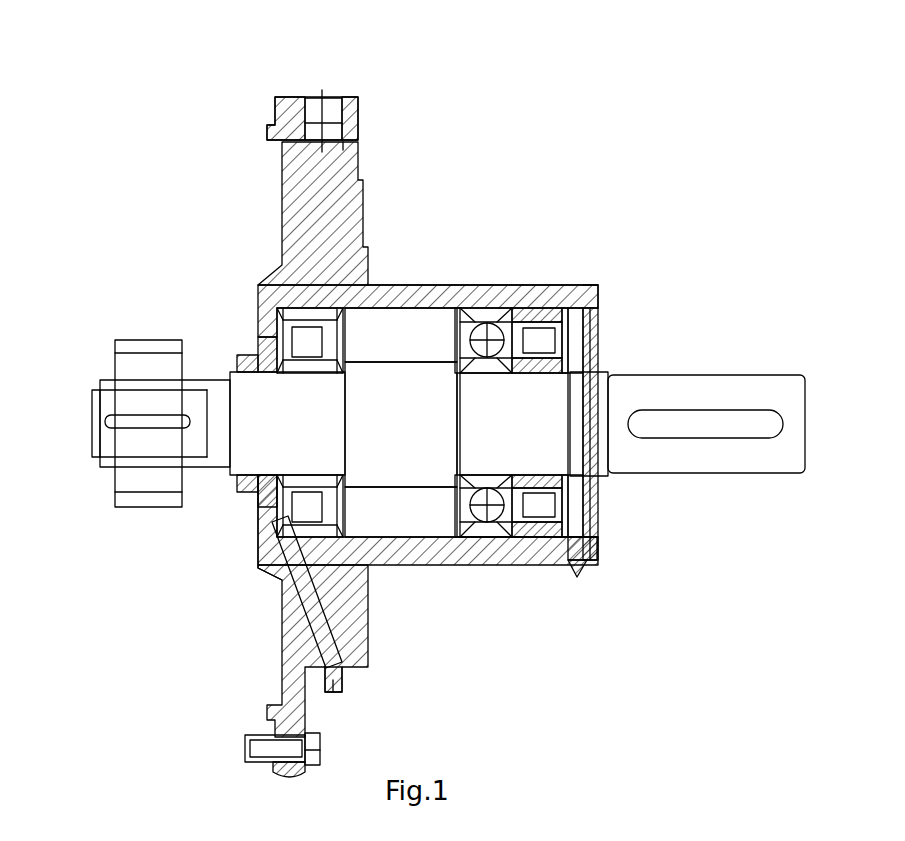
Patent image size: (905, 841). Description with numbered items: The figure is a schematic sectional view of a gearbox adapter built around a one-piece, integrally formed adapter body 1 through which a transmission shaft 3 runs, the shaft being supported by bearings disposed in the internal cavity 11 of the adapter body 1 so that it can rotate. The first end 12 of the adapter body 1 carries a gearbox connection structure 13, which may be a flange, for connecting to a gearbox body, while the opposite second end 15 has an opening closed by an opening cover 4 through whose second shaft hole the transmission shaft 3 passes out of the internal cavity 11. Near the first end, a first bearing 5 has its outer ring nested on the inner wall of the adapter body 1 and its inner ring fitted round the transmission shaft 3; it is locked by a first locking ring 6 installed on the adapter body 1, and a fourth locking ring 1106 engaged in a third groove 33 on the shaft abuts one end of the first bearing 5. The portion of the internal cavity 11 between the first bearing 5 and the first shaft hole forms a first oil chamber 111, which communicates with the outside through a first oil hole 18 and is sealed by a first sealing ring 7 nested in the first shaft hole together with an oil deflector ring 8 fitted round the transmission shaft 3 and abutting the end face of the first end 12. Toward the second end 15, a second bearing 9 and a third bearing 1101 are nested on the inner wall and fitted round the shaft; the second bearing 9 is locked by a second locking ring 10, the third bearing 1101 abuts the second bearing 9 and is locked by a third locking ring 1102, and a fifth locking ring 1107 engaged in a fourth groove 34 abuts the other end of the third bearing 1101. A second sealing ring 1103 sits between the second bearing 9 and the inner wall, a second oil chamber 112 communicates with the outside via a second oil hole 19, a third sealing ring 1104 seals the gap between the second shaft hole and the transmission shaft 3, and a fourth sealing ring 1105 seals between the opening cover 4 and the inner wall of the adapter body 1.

The adapter body 1 is at (418, 308).
The transmission shaft 3 is at (712, 402).
The opening cover 4 is at (598, 323).
The first bearing 5 is at (262, 565).
The first locking ring 6 is at (373, 277).
The first sealing ring 7 is at (243, 347).
The oil deflector ring 8 is at (235, 362).
The second bearing 9 is at (443, 563).
The second locking ring 10 is at (480, 287).
The internal cavity 11 is at (453, 287).
The first end 12 is at (255, 287).
The gearbox connection structure 13 is at (352, 98).
The second end 15 is at (593, 562).
The first oil hole 18 is at (350, 655).
The second oil hole 19 is at (593, 548).
The third groove 33 is at (285, 397).
The fourth groove 34 is at (558, 403).
The first oil chamber 111 is at (257, 523).
The second oil chamber 112 is at (583, 493).
The third bearing 1101 is at (500, 560).
The third locking ring 1102 is at (585, 287).
The second sealing ring 1103 is at (517, 287).
The third sealing ring 1104 is at (600, 360).
The fourth sealing ring 1105 is at (603, 288).
The fourth locking ring 1106 is at (283, 472).
The fifth locking ring 1107 is at (613, 378).